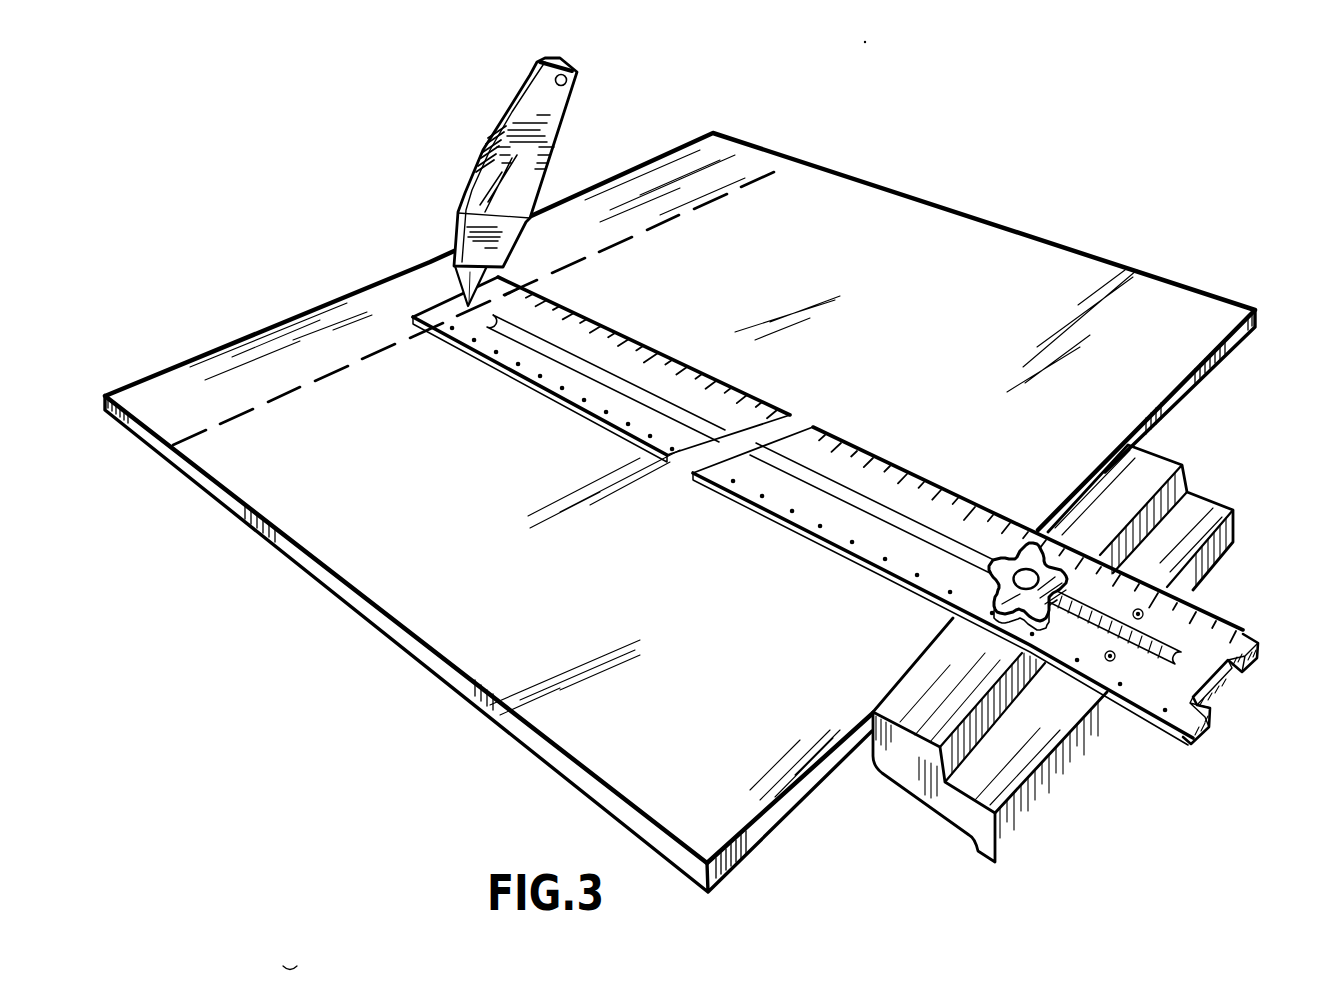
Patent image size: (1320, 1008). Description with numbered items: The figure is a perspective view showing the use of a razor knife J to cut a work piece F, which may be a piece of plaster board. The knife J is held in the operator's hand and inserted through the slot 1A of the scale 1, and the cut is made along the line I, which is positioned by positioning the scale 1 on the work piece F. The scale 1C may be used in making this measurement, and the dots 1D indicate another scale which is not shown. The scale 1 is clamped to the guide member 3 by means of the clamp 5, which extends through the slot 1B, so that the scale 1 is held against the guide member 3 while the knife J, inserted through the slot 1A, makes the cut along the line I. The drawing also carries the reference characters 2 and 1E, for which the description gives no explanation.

The scale 1 is at (848, 553).
The slot 1A is at (458, 298).
The slot 1B is at (924, 514).
The scale 1C is at (693, 378).
The dots 1D is at (548, 380).
The fastener hole 1E is at (1106, 661).
The end tab of straightedge 2 is at (1247, 631).
The guide member 3 is at (1183, 466).
The clamp 5 is at (1048, 540).
The work piece F is at (293, 596).
The line I is at (327, 376).
The razor knife J is at (578, 73).